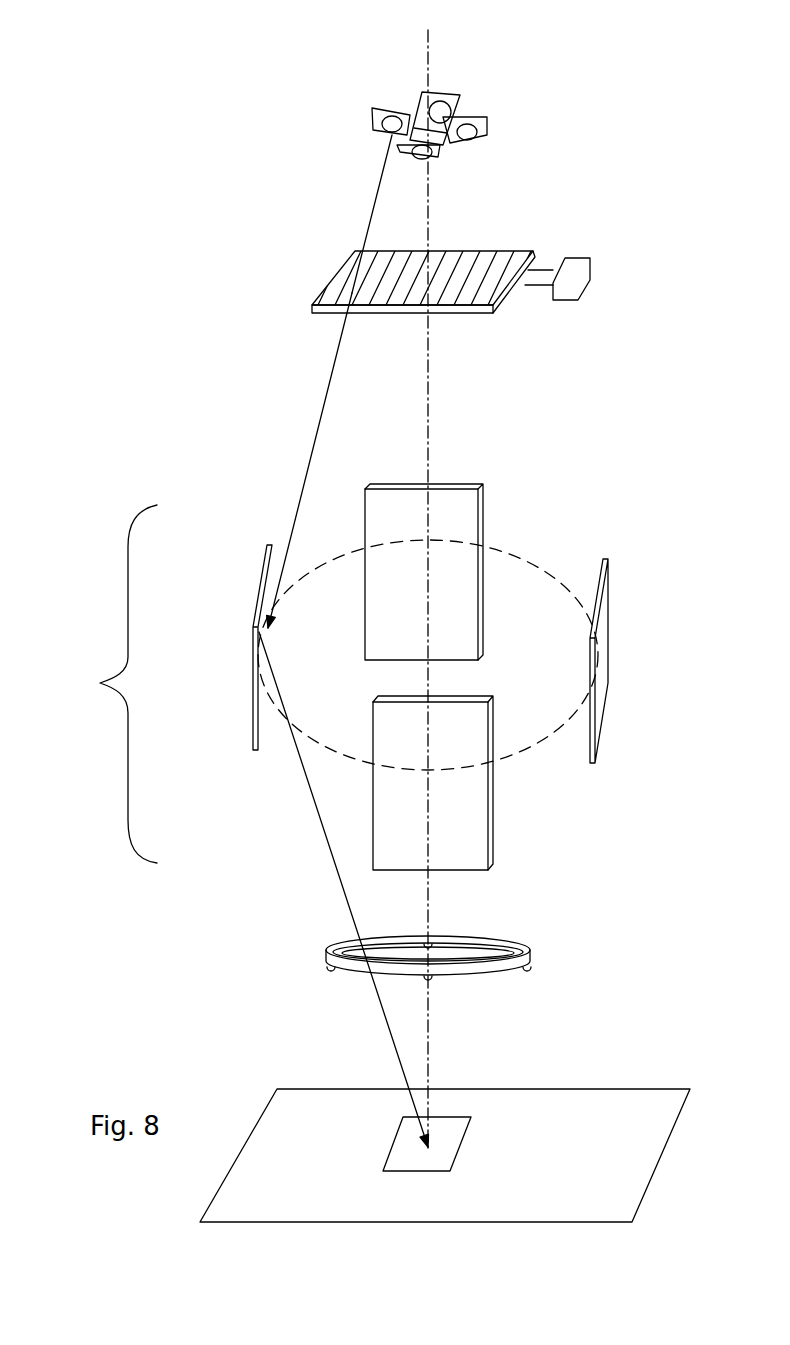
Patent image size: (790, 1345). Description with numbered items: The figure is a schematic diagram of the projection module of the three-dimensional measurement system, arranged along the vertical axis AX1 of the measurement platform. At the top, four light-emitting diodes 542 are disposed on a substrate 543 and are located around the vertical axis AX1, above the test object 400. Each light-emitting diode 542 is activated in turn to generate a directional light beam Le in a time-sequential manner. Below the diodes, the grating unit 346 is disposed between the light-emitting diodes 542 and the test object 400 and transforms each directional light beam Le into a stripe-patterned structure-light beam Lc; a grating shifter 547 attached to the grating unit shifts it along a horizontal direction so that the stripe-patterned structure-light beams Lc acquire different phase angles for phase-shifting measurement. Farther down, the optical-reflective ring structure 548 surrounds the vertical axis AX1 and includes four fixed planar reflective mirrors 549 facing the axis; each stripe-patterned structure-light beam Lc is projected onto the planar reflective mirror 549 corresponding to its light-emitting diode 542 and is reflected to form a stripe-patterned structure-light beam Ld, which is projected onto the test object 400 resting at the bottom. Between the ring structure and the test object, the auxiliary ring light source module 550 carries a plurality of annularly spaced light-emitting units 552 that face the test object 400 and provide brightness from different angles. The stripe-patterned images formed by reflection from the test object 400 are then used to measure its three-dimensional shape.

The substrate 543 is at (398, 108).
The light-emitting diode 542 is at (440, 107).
The directional light beam Le is at (367, 213).
The vertical axis AX1 is at (430, 203).
The diffraction grating plate 346 is at (333, 280).
The grating shifter 547 is at (587, 290).
The stripe-patterned structure-light beam Lc is at (317, 432).
The optical-reflective ring structure 548 is at (324, 684).
The planar reflective mirror 549 is at (483, 515).
The stripe-patterned structure-light beam Ld is at (332, 858).
The auxiliary ring light source module 550 is at (310, 971).
The light-emitting unit 552 is at (331, 974).
The test object 400 is at (533, 1089).